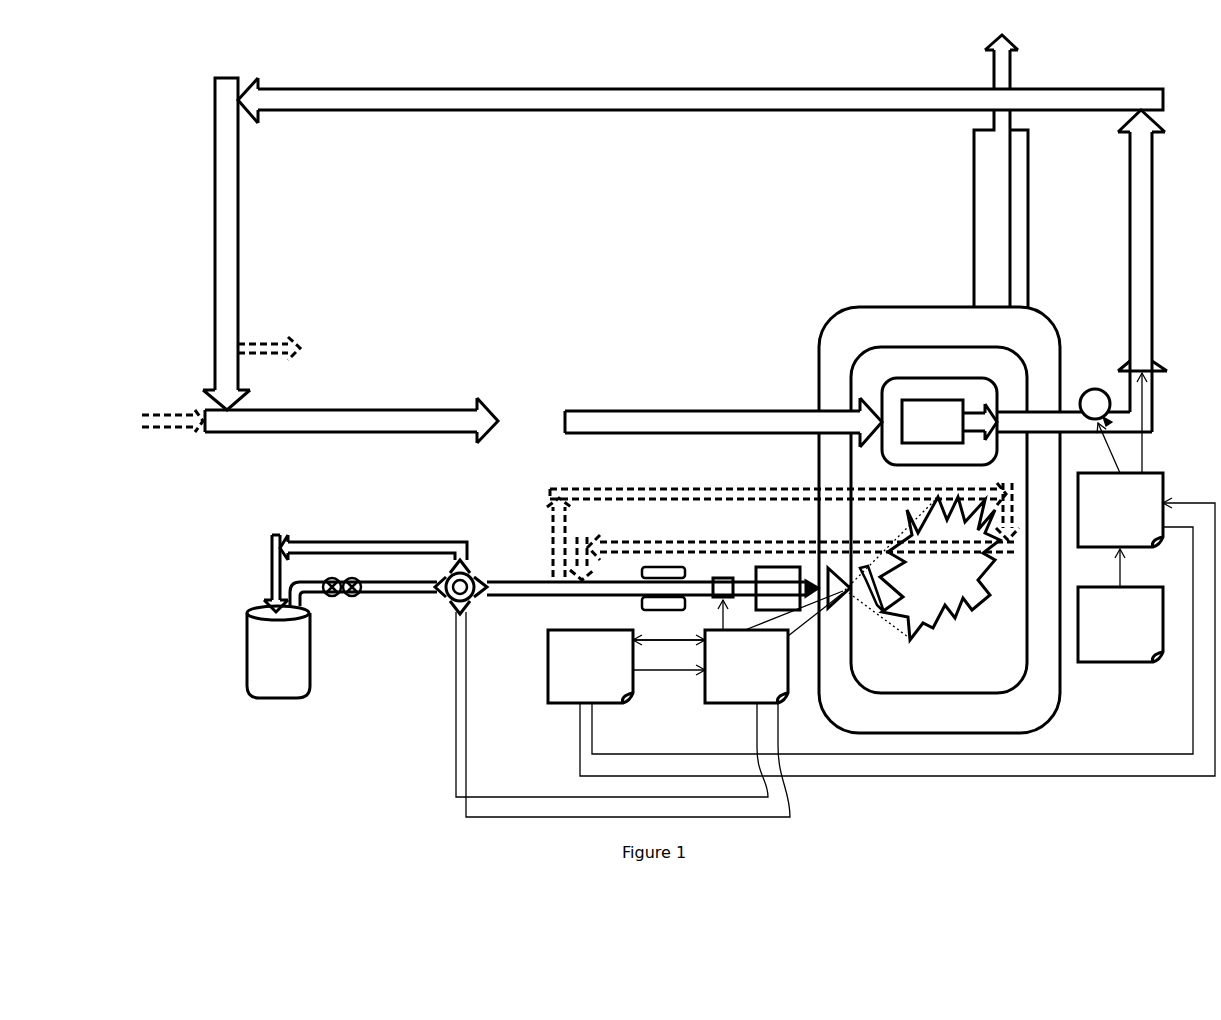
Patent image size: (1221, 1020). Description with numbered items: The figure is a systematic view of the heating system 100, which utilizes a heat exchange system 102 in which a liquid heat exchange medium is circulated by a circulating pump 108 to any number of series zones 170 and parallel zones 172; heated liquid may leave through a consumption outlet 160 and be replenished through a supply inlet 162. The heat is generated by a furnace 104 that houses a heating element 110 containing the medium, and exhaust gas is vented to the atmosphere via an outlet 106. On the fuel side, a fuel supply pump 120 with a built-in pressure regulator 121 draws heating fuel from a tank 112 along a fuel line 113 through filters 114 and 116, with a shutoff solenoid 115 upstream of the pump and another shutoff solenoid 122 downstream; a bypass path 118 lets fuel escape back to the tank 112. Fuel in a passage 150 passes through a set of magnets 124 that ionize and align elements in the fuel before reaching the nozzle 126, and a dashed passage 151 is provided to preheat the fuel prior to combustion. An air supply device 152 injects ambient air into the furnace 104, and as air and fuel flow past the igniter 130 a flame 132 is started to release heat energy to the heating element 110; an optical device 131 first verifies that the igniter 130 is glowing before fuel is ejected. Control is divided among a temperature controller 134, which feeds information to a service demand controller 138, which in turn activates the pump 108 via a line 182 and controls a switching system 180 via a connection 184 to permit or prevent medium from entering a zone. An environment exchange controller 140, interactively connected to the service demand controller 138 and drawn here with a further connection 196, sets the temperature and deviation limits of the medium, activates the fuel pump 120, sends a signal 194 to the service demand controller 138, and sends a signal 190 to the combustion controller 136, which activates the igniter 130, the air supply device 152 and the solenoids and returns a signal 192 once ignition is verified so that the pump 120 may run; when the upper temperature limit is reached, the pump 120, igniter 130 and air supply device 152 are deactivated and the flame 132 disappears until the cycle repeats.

The heating system 100 is at (196, 120).
The heat exchange system 102 is at (423, 112).
The furnace 104 is at (880, 317).
The outlet 106 is at (973, 203).
The circulating pump 108 is at (1094, 388).
The heating element 110 is at (898, 398).
The tank 112 is at (246, 670).
The fuel line 113 is at (396, 598).
The filter 114 is at (353, 598).
The shutoff solenoid 115 is at (455, 606).
The filter 116 is at (333, 600).
The bypass path 118 is at (370, 546).
The fuel supply pump 120 is at (445, 568).
The pressure regulator 121 is at (464, 606).
The shutoff solenoid 122 is at (720, 578).
The set of magnets 124 is at (660, 567).
The nozzle 126 is at (841, 600).
The igniter 130 is at (882, 614).
The optical device 131 is at (794, 615).
The flame 132 is at (946, 622).
The temperature controller 134 is at (1110, 642).
The combustion controller 136 is at (747, 662).
The service demand controller 138 is at (1143, 490).
The environment exchange controller 140 is at (612, 672).
The passage 150 is at (540, 578).
The passage 151 is at (632, 486).
The air supply device 152 is at (773, 565).
The consumption outlet 160 is at (270, 338).
The supply inlet 162 is at (175, 436).
The series zones 170 is at (522, 415).
The parallel zones 172 is at (152, 272).
The switching system 180 is at (1162, 363).
The line 182 is at (1096, 448).
The connection 184 is at (1165, 423).
The signal 190 is at (672, 672).
The signal 192 is at (685, 615).
The signal 194 is at (580, 713).
The control line 196 is at (1192, 728).